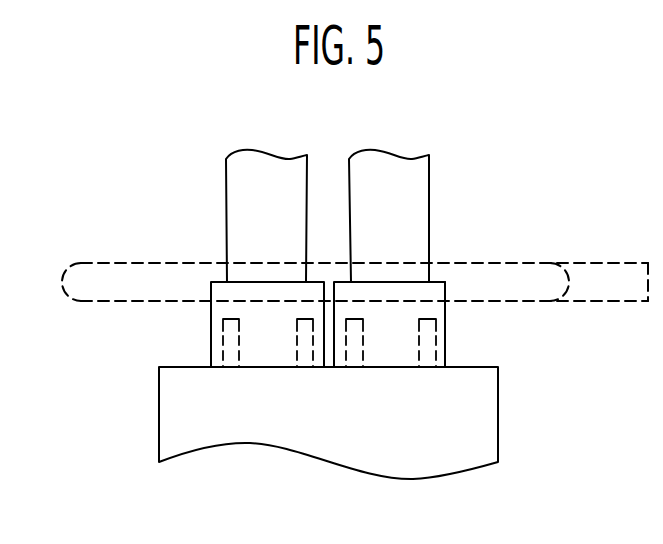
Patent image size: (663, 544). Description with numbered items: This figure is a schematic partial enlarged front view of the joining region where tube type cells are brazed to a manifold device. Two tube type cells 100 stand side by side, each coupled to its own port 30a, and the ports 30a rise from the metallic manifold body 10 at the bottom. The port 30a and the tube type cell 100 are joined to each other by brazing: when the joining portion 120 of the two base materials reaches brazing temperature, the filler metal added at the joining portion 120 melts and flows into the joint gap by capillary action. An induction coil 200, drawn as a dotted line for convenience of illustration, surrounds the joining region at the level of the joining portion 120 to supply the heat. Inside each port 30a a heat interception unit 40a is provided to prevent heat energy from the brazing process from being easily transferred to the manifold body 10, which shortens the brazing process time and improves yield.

The manifold body 10 is at (498, 425).
The port 30a is at (447, 324).
The heat interception unit 40a is at (433, 347).
The tube type cell 100 is at (424, 179).
The joining portion 120 is at (431, 277).
The induction coil 200 is at (618, 265).